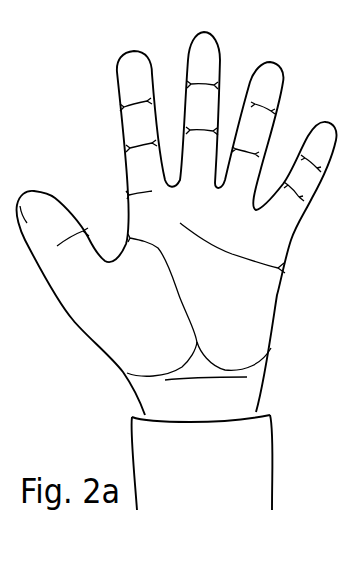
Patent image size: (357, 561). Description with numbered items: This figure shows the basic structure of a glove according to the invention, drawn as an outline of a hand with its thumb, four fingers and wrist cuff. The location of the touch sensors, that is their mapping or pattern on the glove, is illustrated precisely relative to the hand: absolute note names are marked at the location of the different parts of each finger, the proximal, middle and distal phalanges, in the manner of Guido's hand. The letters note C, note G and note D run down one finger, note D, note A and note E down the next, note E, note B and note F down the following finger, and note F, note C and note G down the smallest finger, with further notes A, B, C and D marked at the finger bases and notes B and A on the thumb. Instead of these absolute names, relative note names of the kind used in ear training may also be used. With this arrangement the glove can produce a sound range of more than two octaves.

The note A is at (138, 176).
The note B is at (146, 163).
The note C is at (217, 139).
The note D is at (206, 143).
The note E is at (233, 112).
The note F is at (281, 154).
The note G is at (210, 160).